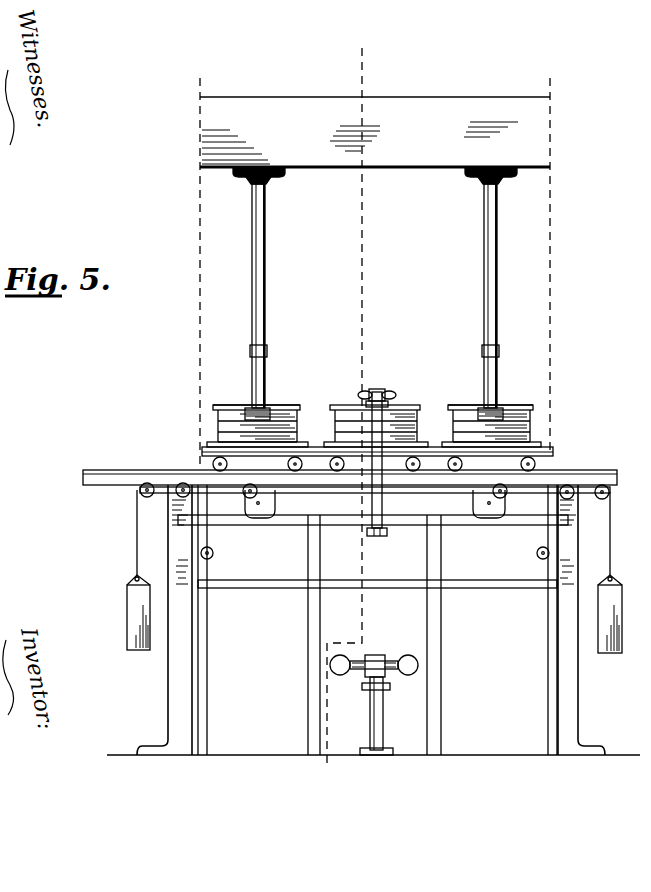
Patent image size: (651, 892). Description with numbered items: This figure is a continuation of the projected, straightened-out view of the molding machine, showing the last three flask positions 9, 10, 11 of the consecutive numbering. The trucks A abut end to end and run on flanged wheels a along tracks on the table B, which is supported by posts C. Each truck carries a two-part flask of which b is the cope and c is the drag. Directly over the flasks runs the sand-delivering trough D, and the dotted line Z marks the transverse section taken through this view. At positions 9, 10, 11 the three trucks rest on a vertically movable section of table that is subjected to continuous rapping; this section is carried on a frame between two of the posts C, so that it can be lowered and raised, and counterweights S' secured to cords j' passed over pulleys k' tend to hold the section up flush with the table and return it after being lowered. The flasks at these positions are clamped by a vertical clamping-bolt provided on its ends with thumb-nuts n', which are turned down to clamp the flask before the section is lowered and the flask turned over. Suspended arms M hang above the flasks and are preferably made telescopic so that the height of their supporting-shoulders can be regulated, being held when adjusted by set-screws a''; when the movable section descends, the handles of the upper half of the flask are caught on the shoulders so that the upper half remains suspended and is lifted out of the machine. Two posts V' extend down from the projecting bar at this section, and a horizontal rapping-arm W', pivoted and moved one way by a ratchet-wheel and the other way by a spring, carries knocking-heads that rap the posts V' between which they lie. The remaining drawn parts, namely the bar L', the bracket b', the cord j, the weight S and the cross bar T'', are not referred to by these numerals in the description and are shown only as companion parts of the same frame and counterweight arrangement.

The dotted line zz Z is at (341, 407).
The sand-delivering trough D is at (375, 274).
The suspended arms M is at (266, 262).
The set-screws a'' is at (386, 346).
The position 9 is at (257, 415).
The position 10 is at (376, 412).
The position 11 is at (491, 413).
The drag c is at (213, 407).
The cope b is at (360, 420).
The thumb-nuts n' is at (378, 452).
The trucks A is at (202, 452).
The flanged wheels a is at (374, 463).
The table B is at (96, 470).
The hanger bar L' is at (375, 497).
The hanger brackets b' is at (375, 503).
The pulleys k' is at (358, 521).
The cords j' is at (126, 533).
The right cord j is at (619, 534).
The counterweights S' is at (123, 612).
The right weight S is at (619, 614).
The posts C is at (168, 540).
The posts V' is at (377, 620).
The cross bar T'' is at (373, 535).
The rapping-arm W' is at (374, 693).